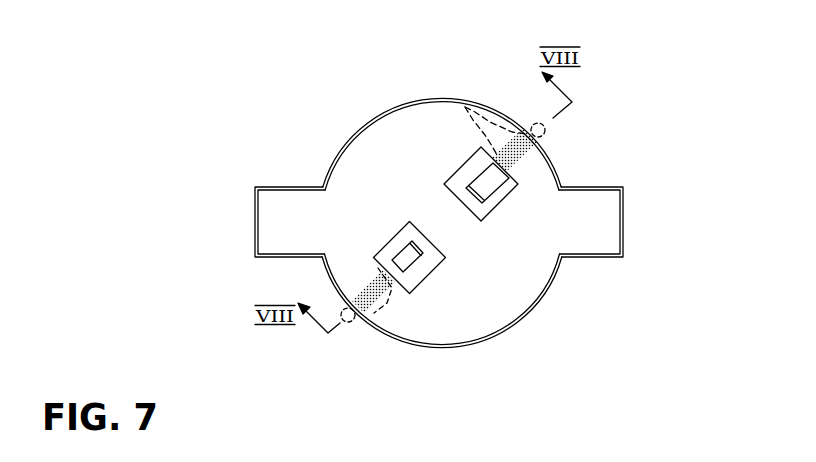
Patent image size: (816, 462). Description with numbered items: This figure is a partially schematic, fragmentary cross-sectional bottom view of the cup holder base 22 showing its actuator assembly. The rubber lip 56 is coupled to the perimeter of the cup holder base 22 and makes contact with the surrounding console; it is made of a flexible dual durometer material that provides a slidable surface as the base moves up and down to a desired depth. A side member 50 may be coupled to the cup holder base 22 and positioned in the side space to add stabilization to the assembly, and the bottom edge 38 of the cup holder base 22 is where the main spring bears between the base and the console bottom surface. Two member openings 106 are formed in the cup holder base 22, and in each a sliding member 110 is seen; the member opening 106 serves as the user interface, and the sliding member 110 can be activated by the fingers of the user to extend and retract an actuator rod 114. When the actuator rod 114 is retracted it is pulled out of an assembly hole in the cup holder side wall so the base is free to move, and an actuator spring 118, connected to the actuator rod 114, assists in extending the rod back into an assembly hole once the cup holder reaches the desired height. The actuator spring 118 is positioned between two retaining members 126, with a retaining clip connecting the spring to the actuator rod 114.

The cup holder base 22 is at (301, 184).
The bottom edge 38 is at (480, 309).
The side member 50 is at (631, 233).
The rubber lip 56 is at (442, 113).
The member opening 106 is at (446, 282).
The sliding member 110 is at (415, 169).
The actuator rod 114 is at (490, 209).
The actuator spring 118 is at (518, 220).
The retaining member 126 is at (477, 103).